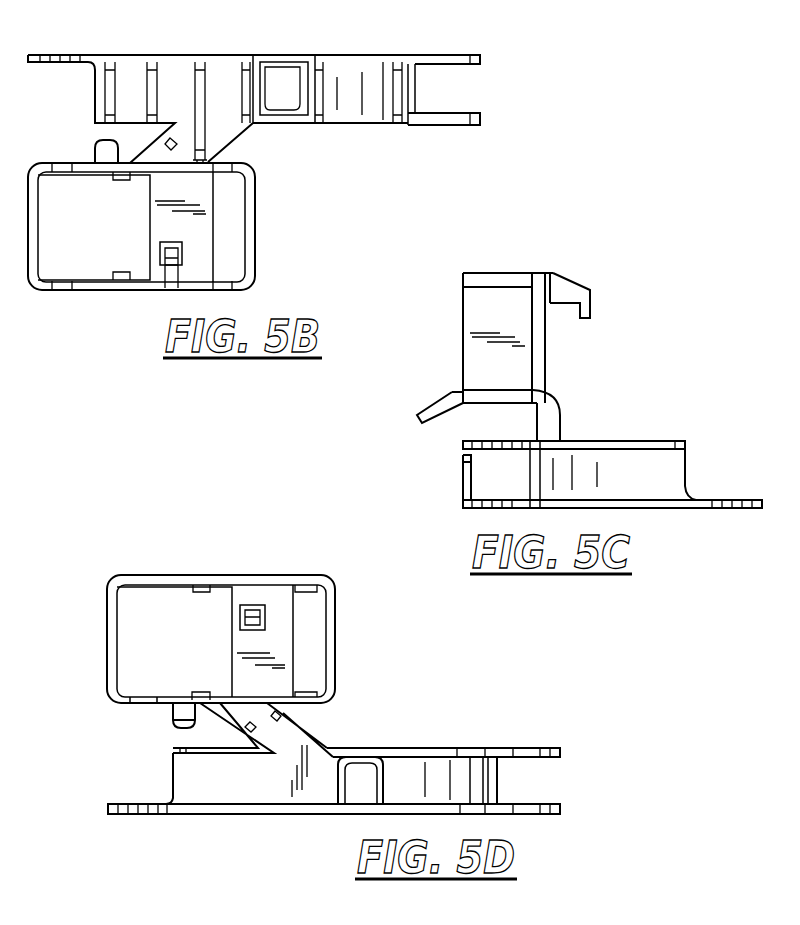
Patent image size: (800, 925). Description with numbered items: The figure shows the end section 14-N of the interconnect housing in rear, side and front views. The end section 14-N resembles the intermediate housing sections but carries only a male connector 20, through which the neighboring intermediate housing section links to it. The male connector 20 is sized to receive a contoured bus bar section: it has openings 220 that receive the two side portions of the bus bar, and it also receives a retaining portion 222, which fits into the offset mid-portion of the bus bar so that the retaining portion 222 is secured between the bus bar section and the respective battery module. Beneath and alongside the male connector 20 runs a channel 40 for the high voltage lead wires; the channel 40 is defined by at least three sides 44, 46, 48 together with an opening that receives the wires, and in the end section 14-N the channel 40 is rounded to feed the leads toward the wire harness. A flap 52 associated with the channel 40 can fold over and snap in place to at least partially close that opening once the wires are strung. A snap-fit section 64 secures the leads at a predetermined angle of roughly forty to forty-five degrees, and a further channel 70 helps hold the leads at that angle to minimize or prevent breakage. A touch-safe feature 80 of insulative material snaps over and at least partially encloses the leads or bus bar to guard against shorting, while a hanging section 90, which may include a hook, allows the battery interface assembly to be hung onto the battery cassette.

In FIG. 5B, the end section 14-N is at (199, 39).
In FIG. 5C, the end section 14-N is at (562, 249).
In FIG. 5D, the end section 14-N is at (307, 518).
In FIG. 5B, the male connector 20 is at (186, 243).
In FIG. 5C, the male connector 20 is at (513, 332).
In FIG. 5D, the male connector 20 is at (192, 623).
In FIG. 5B, the channel 40 is at (306, 93).
In FIG. 5C, the channel 40 is at (570, 475).
In FIG. 5D, the channel 40 is at (363, 769).
In FIG. 5B, the side 44 is at (458, 126).
In FIG. 5C, the side 44 is at (671, 441).
In FIG. 5D, the side 44 is at (538, 747).
In FIG. 5C, the side 46 is at (688, 461).
In FIG. 5D, the side 46 is at (498, 777).
In FIG. 5B, the side 48 is at (443, 57).
In FIG. 5C, the side 48 is at (731, 510).
In FIG. 5D, the side 48 is at (543, 814).
In FIG. 5C, the flap 52 is at (460, 467).
In FIG. 5D, the flap 52 is at (237, 804).
In FIG. 5D, the snap-fit section 64 is at (313, 727).
In FIG. 5D, the channel 70 is at (225, 727).
In FIG. 5B, the touch-safe feature 80 is at (106, 151).
In FIG. 5C, the touch-safe feature 80 is at (425, 409).
In FIG. 5D, the touch-safe feature 80 is at (170, 718).
In FIG. 5C, the hanging section 90 is at (573, 282).
In FIG. 5B, the opening 220 is at (105, 235).
In FIG. 5D, the opening 220 is at (165, 605).
In FIG. 5B, the retaining portion 222 is at (200, 225).
In FIG. 5D, the retaining portion 222 is at (257, 596).